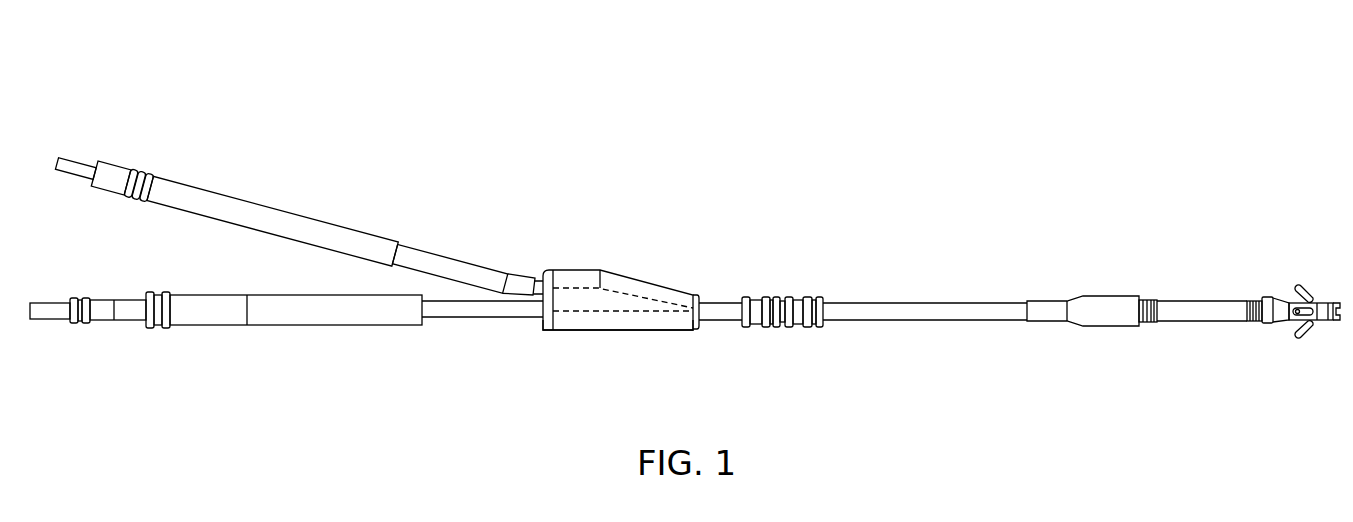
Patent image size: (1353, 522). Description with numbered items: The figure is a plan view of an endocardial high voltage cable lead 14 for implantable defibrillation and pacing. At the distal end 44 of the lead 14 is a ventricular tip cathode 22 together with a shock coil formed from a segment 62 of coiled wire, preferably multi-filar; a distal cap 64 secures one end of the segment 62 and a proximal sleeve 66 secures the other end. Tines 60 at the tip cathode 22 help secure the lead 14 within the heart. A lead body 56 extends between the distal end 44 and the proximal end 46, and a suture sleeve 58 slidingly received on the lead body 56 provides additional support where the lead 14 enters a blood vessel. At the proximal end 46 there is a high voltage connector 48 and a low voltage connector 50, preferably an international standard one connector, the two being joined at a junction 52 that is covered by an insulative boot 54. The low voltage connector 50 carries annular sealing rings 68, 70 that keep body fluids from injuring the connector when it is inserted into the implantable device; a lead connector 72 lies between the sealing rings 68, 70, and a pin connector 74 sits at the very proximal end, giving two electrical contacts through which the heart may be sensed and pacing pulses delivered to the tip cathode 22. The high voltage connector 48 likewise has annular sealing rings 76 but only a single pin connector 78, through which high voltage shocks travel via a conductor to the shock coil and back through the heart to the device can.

The endocardial high voltage cable lead 14 is at (852, 92).
The ventricular tip cathode 22 is at (1334, 302).
The distal end 44 is at (1199, 274).
The proximal end 46 is at (303, 181).
The high voltage connector 48 is at (205, 187).
The low voltage connector 50 is at (296, 324).
The junction 52 is at (574, 272).
The insulative boot 54 is at (616, 329).
The lead body 56 is at (925, 303).
The suture sleeve 58 is at (792, 297).
The tines 60 is at (1303, 329).
The segment of coiled wire 62 is at (1146, 322).
The distal cap 64 is at (1269, 296).
The proximal sleeve 66 is at (1074, 296).
The annular sealing ring 68 is at (161, 292).
The annular sealing ring 70 is at (82, 297).
The lead connector 72 is at (129, 320).
The pin connector 74 is at (49, 320).
The annular sealing rings 76 is at (142, 169).
The pin connector 78 is at (81, 160).